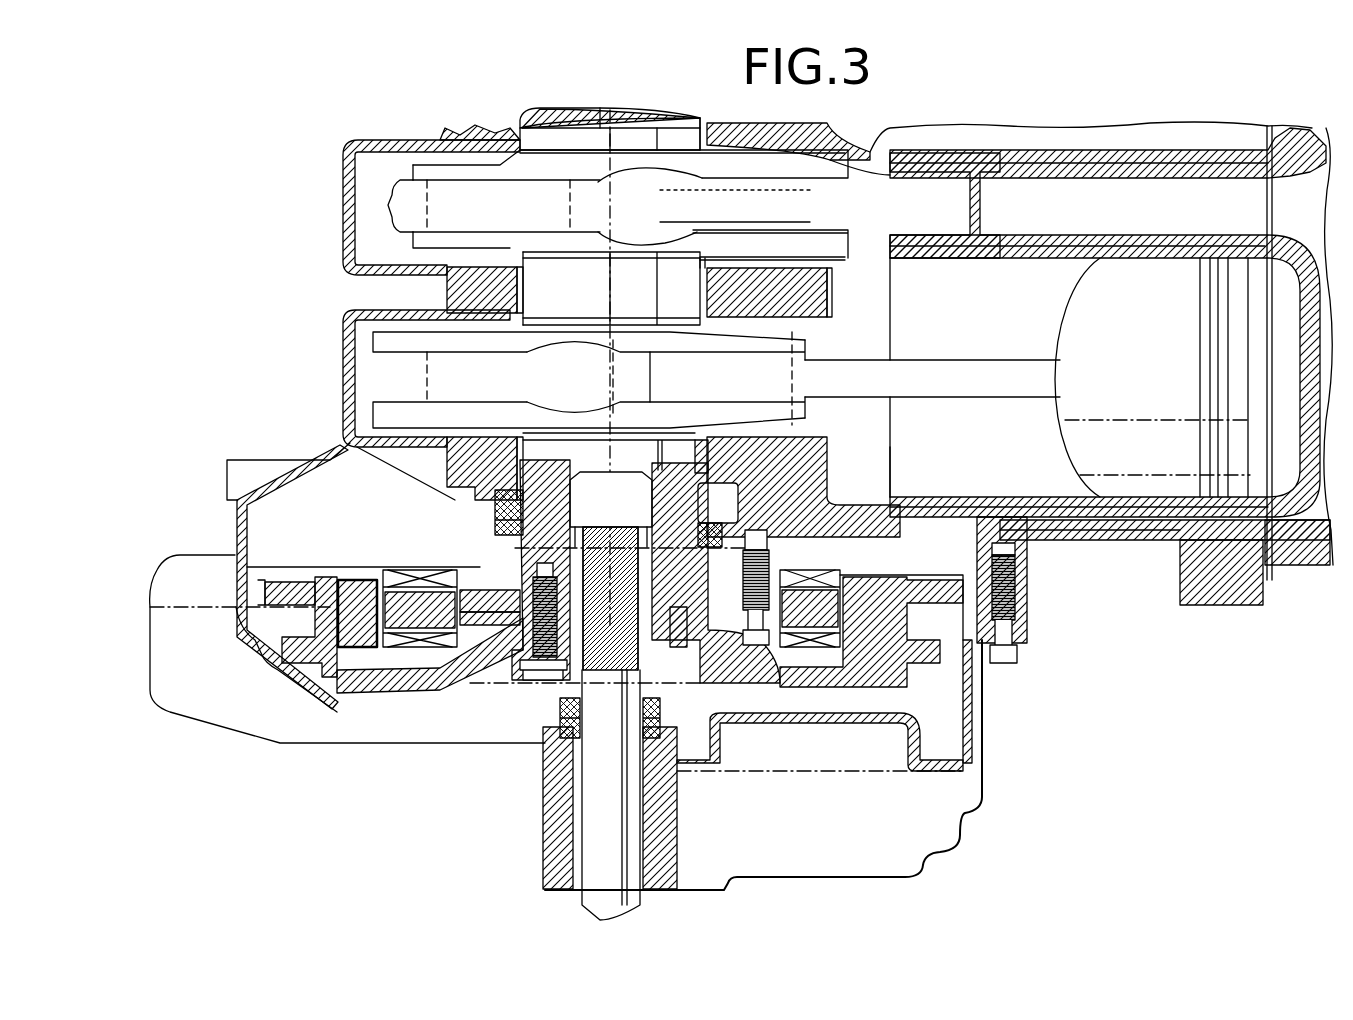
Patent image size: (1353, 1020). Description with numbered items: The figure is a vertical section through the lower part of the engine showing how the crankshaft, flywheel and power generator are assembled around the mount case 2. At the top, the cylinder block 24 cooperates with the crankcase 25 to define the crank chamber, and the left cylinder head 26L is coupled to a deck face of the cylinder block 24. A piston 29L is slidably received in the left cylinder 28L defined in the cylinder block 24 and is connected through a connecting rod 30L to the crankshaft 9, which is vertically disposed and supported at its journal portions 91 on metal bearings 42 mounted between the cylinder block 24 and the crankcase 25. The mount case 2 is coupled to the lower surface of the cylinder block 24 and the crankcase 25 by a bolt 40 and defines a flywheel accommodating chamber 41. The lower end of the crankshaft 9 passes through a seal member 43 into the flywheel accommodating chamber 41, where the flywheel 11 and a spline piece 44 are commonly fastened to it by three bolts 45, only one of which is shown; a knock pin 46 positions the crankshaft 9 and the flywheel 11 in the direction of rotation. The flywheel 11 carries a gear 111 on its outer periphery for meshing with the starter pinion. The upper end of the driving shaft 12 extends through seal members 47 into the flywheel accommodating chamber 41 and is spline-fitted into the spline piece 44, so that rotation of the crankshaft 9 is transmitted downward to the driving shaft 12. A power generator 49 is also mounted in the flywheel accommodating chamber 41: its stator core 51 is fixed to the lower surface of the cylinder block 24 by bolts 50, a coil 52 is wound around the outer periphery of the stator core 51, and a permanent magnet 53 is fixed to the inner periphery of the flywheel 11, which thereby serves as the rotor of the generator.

The mount case 2 is at (975, 722).
The crankshaft 9 is at (512, 512).
The journal portions 91 is at (582, 300).
The flywheel 11 is at (308, 668).
The gear 111 is at (265, 583).
The driving shaft 12 is at (621, 785).
The cylinder block 24 is at (1102, 550).
The crankcase 25 is at (240, 546).
The cylinder head 26L is at (1302, 565).
The left cylinder 28L is at (950, 497).
The piston 29L is at (1141, 380).
The connecting rod 30L is at (942, 372).
The bolt 40 is at (1008, 652).
The flywheel accommodating chamber 41 is at (937, 553).
The metal bearings 42 is at (530, 275).
The seal member 43 is at (712, 525).
The spline piece 44 is at (683, 668).
The bolts 45 is at (523, 700).
The knock pin 46 is at (683, 607).
The seal members 47 is at (545, 725).
The power generator 49 is at (393, 525).
The bolts 50 is at (798, 667).
The stator core 51 is at (472, 595).
The coil 52 is at (425, 572).
The permanent magnet 53 is at (360, 580).